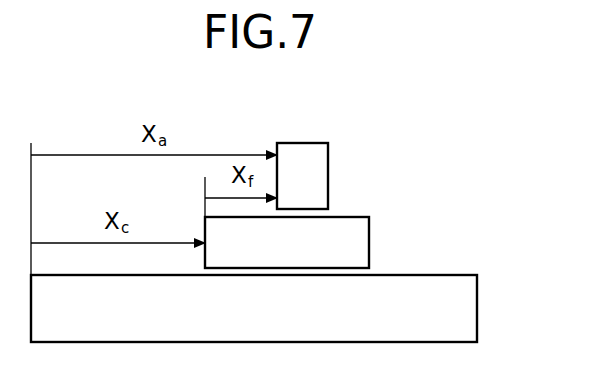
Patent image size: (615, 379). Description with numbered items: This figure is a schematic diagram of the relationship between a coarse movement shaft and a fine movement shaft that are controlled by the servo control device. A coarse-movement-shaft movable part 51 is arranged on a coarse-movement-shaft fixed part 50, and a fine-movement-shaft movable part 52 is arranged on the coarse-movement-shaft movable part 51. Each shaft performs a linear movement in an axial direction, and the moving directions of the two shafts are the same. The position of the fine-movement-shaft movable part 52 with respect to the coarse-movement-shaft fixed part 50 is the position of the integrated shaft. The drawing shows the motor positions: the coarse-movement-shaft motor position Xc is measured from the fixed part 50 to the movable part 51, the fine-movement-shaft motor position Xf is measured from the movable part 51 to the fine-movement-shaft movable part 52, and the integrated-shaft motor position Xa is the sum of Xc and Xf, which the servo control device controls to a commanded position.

The coarse-movement-shaft fixed part 50 is at (477, 305).
The coarse-movement-shaft movable part 51 is at (369, 240).
The fine-movement-shaft movable part 52 is at (328, 175).